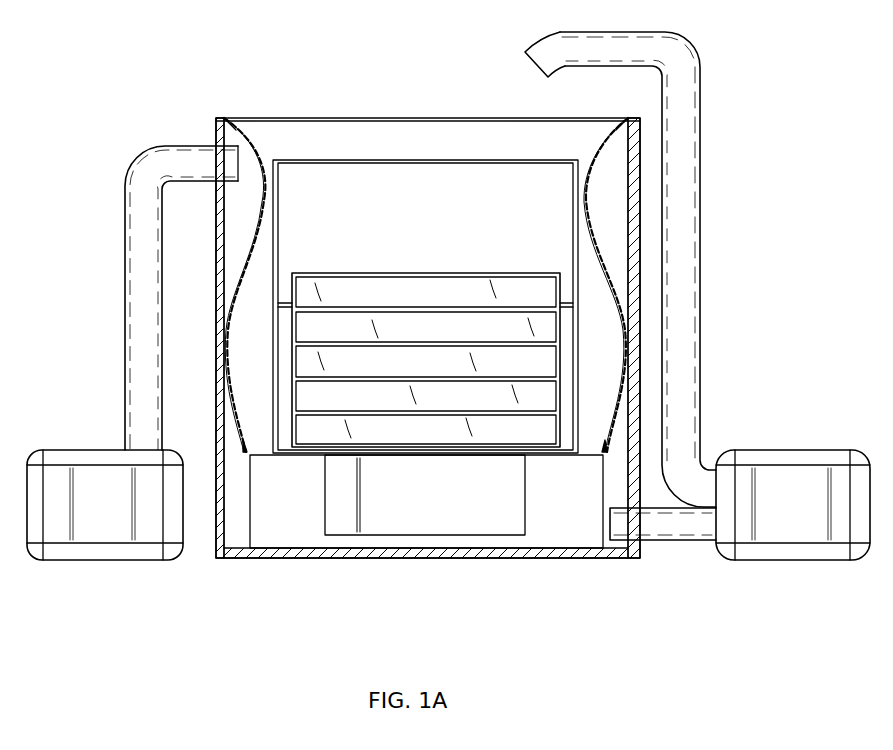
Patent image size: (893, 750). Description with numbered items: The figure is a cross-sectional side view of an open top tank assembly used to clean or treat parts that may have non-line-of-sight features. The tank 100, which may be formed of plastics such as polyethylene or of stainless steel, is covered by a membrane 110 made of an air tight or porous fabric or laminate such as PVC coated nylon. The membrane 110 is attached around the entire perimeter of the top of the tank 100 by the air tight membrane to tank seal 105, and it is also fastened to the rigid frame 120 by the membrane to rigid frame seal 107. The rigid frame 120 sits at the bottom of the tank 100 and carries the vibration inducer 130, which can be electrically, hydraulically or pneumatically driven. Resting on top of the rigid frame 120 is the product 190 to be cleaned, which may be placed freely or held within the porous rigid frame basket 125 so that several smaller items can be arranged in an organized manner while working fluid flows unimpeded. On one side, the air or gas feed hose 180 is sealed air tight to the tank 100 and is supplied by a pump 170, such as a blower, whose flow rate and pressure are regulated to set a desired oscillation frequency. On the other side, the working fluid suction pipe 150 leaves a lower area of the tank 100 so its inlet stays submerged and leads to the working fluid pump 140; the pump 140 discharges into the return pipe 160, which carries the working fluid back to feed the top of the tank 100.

The tank 100 is at (216, 140).
The membrane to tank seal 105 is at (224, 118).
The membrane to rigid frame seal 107 is at (245, 456).
The membrane 110 is at (250, 241).
The rigid frame 120 is at (297, 456).
The rigid frame basket 125 is at (495, 160).
The vibration inducer 130 is at (478, 536).
The working fluid pump 140 is at (770, 562).
The working fluid suction pipe 150 is at (675, 542).
The return pipe 160 is at (700, 248).
The pump 170 is at (108, 562).
The air or gas feed hose 180 is at (125, 258).
The product 190 is at (358, 272).